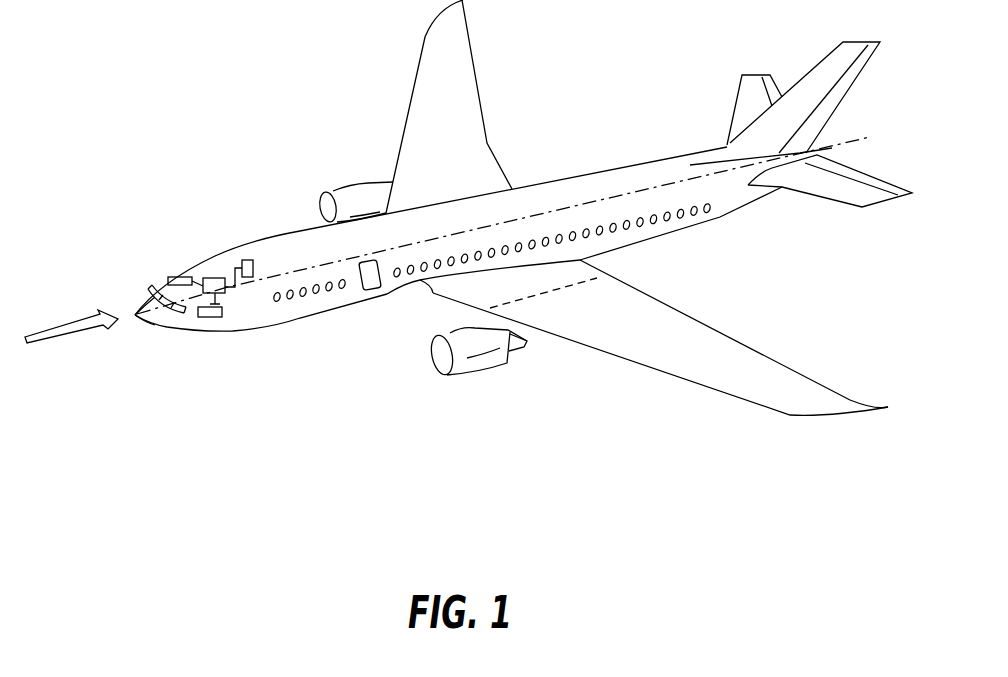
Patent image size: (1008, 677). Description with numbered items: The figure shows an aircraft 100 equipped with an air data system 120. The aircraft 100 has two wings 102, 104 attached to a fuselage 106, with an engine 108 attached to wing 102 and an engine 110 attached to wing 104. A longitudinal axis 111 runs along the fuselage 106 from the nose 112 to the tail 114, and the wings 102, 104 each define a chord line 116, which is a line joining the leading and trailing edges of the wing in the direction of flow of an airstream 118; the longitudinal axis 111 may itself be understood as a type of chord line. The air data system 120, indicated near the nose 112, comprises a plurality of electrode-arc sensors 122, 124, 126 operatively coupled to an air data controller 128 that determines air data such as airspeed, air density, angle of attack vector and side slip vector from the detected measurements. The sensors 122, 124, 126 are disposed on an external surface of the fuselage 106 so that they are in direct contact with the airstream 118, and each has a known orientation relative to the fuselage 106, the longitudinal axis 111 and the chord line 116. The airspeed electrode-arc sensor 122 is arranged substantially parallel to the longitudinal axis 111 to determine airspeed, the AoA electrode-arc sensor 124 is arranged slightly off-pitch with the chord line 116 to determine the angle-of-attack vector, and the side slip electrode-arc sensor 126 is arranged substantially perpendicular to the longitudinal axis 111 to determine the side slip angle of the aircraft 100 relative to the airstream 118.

The aircraft 100 is at (262, 55).
The wing 102 is at (455, 43).
The wing 104 is at (832, 417).
The fuselage 106 is at (260, 242).
The engine 108 is at (345, 190).
The engine 110 is at (478, 372).
The longitudinal axis 111 is at (500, 226).
The nose 112 is at (137, 313).
The tail 114 is at (838, 138).
The chord line 116 is at (540, 292).
The airstream 118 is at (65, 323).
The air data system 120 is at (265, 337).
The airspeed electrode-arc sensor 122 is at (183, 270).
The AoA electrode-arc sensor 124 is at (222, 316).
The side slip electrode-arc sensor 126 is at (258, 267).
The air data controller 128 is at (214, 278).